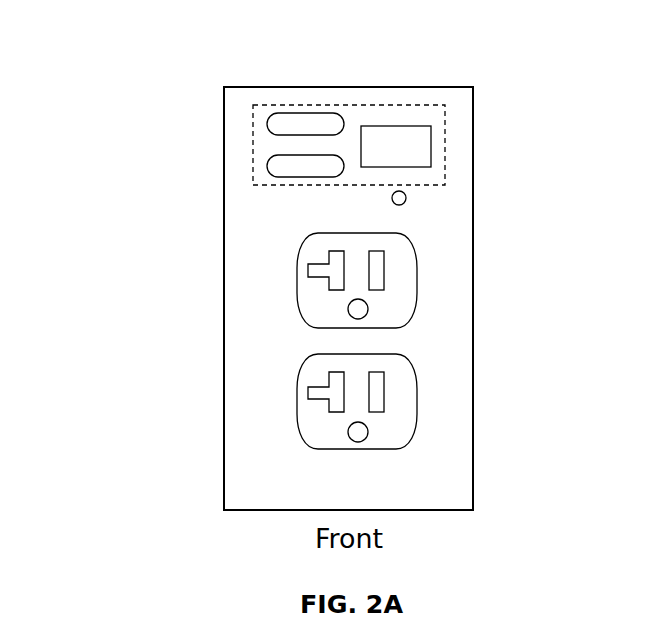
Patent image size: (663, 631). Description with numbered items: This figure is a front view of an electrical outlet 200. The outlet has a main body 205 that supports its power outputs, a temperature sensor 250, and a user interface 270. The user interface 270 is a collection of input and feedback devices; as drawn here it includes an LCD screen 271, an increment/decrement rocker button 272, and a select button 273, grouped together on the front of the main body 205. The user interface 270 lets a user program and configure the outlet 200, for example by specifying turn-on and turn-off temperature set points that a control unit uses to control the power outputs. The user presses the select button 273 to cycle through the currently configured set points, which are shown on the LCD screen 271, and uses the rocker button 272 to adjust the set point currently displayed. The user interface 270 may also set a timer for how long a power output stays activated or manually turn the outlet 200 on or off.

The electrical outlet 200 is at (143, 51).
The main body 205 is at (405, 87).
The temperature sensor 250 is at (406, 200).
The user interface 270 is at (445, 147).
The LCD screen 271 is at (431, 160).
The increment/decrement rocker button 272 is at (267, 124).
The select button 273 is at (267, 166).